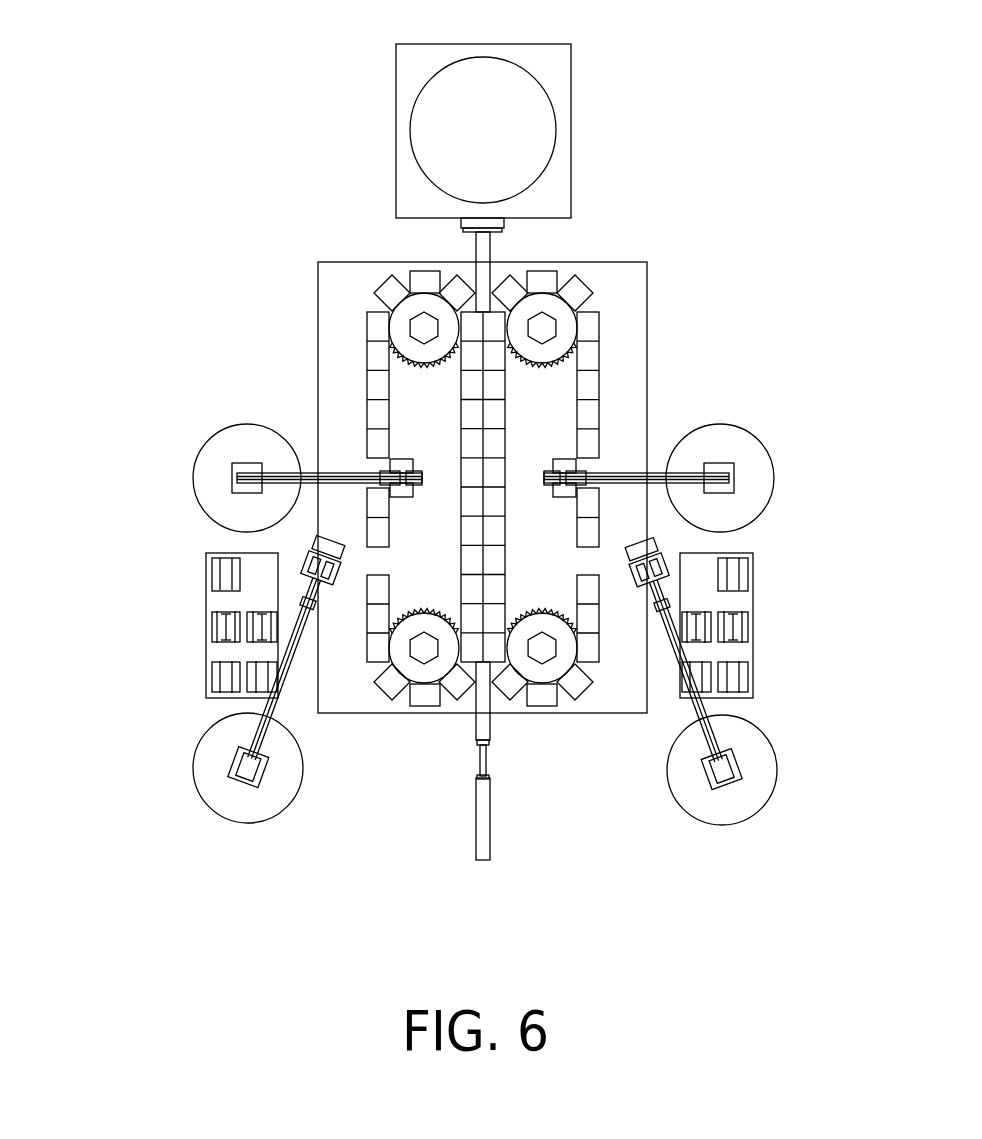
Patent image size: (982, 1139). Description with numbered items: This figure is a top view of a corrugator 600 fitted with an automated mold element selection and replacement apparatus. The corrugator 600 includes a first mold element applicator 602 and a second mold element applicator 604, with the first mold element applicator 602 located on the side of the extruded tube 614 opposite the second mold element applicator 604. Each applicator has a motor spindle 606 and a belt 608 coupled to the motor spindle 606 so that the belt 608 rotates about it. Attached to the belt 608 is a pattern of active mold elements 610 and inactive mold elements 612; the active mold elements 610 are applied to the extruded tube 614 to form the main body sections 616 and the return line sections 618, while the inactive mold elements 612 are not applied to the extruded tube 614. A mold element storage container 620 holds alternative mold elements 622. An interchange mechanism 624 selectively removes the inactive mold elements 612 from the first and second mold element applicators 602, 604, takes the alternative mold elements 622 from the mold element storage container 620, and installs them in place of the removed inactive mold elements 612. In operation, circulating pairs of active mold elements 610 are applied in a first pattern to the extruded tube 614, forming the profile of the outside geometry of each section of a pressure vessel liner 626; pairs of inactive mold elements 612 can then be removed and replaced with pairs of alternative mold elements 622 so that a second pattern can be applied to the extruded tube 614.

The corrugator 600 is at (163, 133).
The first mold element applicator 602 is at (355, 340).
The second mold element applicator 604 is at (603, 317).
The motor spindle 606 is at (422, 326).
The belt 608 is at (576, 415).
The active mold elements 610 is at (460, 400).
The inactive mold elements 612 is at (367, 440).
The extruded tube 614 is at (492, 248).
The main body sections 616 is at (475, 830).
The return line sections 618 is at (487, 760).
The mold element storage container 620 is at (206, 557).
The alternative mold elements 622 is at (212, 625).
The interchange mechanism 624 is at (207, 813).
The pressure vessel liner 626 is at (492, 831).